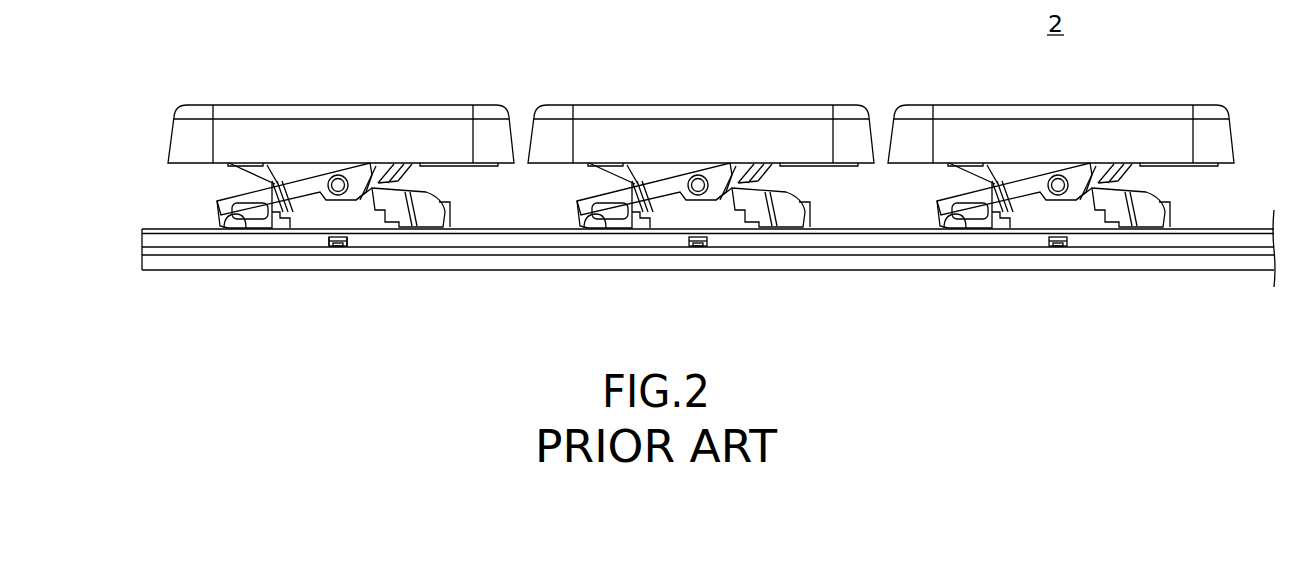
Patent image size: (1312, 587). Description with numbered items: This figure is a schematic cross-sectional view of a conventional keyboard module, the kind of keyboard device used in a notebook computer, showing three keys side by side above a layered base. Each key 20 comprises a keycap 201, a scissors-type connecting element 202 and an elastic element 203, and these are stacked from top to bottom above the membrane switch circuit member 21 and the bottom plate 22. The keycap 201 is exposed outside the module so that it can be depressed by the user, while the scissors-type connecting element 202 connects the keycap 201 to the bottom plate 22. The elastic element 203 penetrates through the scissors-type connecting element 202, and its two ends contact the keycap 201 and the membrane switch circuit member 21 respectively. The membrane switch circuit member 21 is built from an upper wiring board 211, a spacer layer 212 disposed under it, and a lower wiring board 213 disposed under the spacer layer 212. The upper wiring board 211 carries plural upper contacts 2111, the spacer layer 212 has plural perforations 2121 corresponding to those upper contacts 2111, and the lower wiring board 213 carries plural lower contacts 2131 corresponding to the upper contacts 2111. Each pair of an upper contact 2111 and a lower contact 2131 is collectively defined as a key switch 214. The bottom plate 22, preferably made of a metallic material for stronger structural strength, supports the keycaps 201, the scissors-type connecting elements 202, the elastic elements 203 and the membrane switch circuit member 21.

The key 20 is at (701, 126).
The keycap 201 is at (400, 110).
The scissors-type connecting element 202 is at (462, 62).
The elastic element 203 is at (295, 178).
The membrane switch circuit member 21 is at (661, 266).
The upper wiring board 211 is at (188, 226).
The spacer layer 212 is at (165, 243).
The lower wiring board 213 is at (680, 244).
The key switch 214 is at (657, 302).
The upper contact 2111 is at (328, 240).
The lower contact 2131 is at (345, 243).
The perforation 2121 is at (390, 280).
The bottom plate 22 is at (1137, 262).